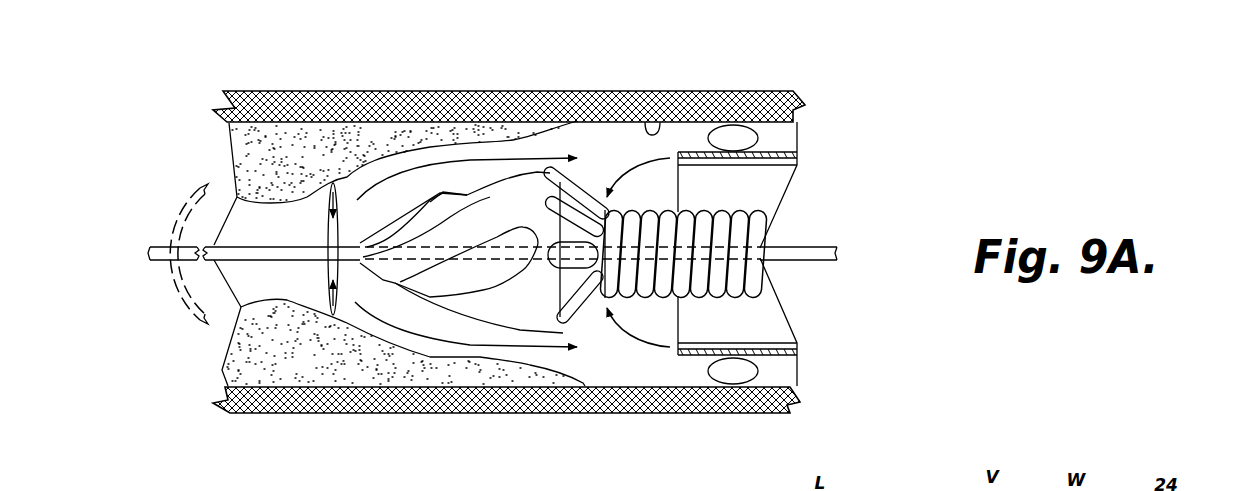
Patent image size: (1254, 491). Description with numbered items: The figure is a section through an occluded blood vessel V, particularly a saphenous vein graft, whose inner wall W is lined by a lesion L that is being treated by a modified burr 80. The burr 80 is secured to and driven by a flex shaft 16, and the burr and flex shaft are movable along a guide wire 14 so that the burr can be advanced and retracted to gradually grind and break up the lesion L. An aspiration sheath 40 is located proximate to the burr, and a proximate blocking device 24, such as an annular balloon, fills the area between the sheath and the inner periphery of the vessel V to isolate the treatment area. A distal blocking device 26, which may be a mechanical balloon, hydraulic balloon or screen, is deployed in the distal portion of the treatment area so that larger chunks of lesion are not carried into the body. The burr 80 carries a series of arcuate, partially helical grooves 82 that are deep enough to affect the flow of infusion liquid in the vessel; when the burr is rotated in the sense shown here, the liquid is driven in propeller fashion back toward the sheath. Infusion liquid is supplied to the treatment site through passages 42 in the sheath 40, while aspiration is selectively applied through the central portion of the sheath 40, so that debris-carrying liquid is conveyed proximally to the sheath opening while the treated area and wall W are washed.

The guide wire 14 is at (213, 245).
The flex shaft 16 is at (760, 226).
The proximate blocking device 24 is at (740, 137).
The distal blocking device 26 is at (170, 217).
The aspiration sheath 40 is at (799, 124).
The passages 42 is at (797, 158).
The modified burr 80 is at (591, 329).
The arcuate, partially helical grooves 82 is at (467, 280).
The lesion L is at (380, 133).
The blood vessel V is at (577, 122).
The inner wall W is at (658, 122).